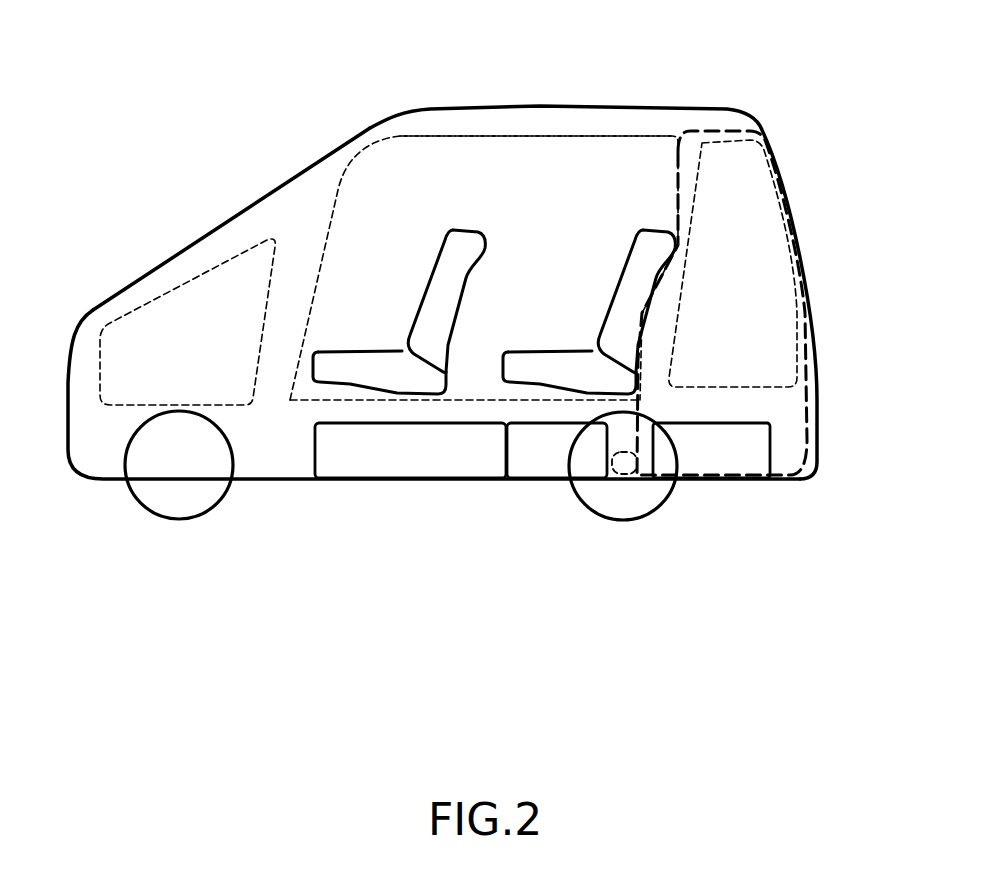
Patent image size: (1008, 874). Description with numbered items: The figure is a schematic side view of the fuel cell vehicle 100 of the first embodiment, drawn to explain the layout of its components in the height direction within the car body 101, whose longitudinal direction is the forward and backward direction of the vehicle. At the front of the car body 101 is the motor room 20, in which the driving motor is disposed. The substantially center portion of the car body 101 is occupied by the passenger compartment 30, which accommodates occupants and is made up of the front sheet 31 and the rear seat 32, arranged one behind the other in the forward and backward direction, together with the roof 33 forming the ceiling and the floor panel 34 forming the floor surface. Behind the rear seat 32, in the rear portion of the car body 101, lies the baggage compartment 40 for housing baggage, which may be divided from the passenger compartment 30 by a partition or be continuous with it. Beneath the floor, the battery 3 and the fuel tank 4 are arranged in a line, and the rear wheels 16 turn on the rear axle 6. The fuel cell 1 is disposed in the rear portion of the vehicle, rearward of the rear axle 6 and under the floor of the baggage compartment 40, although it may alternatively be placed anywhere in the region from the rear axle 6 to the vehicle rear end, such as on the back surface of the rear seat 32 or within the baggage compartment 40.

The fuel cell vehicle 100 is at (770, 114).
The car body 101 is at (294, 180).
The motor room 20 is at (185, 278).
The passenger compartment 30 is at (525, 150).
The front sheet 31 is at (463, 230).
The rear seat 32 is at (658, 230).
The roof 33 is at (600, 150).
The floor panel 34 is at (470, 397).
The baggage compartment 40 is at (760, 120).
The battery 3 is at (337, 465).
The fuel tank 4 is at (537, 460).
The fuel cell 1 is at (738, 472).
The rear wheels 16 is at (607, 522).
The rear axle 6 is at (633, 473).